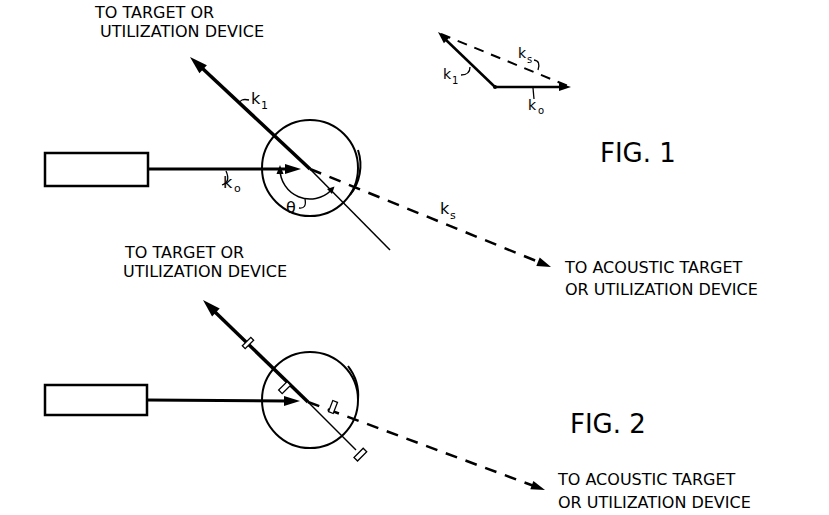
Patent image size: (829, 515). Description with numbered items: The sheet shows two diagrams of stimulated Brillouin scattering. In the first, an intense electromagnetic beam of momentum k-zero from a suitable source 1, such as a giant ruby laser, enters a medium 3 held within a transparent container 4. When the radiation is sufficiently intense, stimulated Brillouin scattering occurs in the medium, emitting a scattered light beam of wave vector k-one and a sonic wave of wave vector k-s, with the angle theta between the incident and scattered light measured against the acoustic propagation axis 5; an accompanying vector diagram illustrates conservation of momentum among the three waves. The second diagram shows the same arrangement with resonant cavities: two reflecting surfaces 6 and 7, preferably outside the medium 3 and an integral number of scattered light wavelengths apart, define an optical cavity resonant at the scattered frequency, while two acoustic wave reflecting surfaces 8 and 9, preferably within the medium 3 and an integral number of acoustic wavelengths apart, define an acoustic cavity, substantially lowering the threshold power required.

In FIG. 1, the coherent light source 1 is at (117, 153).
In FIG. 2, the coherent light source 1 is at (123, 385).
In FIG. 1, the medium 3 is at (346, 131).
In FIG. 2, the medium 3 is at (334, 367).
In FIG. 1, the transparent container 4 is at (357, 164).
In FIG. 2, the transparent container 4 is at (353, 374).
In FIG. 1, the acoustic propagation axis 5 is at (316, 162).
In FIG. 2, the reflecting surface 6 is at (253, 340).
In FIG. 2, the reflecting surface 7 is at (361, 463).
In FIG. 2, the acoustic wave reflecting surface 8 is at (280, 387).
In FIG. 2, the acoustic wave reflecting surface 9 is at (340, 405).